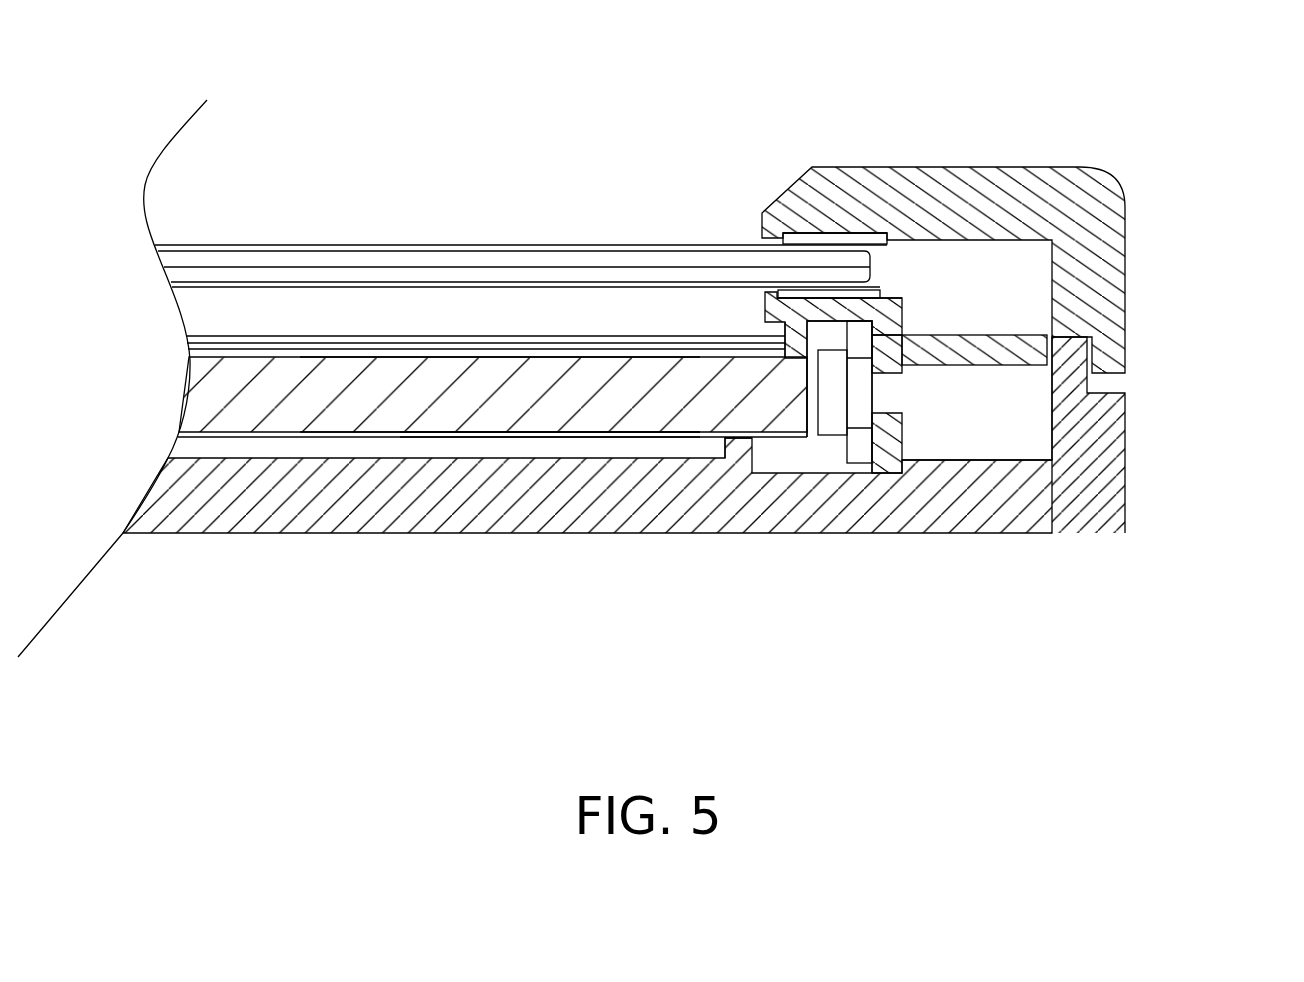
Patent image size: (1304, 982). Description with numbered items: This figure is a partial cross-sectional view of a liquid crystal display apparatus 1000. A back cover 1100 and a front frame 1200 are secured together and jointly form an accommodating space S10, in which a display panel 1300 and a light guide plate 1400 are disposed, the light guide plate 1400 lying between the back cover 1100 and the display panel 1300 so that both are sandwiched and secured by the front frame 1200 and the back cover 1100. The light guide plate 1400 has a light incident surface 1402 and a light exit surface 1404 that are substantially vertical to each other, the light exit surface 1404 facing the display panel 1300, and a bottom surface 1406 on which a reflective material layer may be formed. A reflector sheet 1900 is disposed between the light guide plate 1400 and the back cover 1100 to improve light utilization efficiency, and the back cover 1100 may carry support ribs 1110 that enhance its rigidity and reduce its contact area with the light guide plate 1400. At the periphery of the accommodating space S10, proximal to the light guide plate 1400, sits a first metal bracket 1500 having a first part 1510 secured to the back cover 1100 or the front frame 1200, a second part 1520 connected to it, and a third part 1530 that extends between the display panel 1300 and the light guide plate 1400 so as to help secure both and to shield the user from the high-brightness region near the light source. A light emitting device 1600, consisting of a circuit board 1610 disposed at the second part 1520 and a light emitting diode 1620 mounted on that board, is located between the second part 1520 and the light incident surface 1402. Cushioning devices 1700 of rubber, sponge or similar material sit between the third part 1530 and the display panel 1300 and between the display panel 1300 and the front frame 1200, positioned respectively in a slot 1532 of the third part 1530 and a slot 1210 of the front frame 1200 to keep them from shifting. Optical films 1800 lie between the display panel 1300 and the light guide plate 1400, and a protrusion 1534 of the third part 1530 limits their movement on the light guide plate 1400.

The display apparatus 1000 is at (1110, 712).
The back cover 1100 is at (402, 518).
The support ribs 1110 is at (736, 443).
The front frame 1200 is at (1002, 183).
The slot 1210 is at (860, 230).
The display panel 1300 is at (358, 260).
The light guide plate 1400 is at (486, 420).
The light incident surface 1402 is at (796, 398).
The light exit surface 1404 is at (572, 362).
The bottom surface 1406 is at (436, 428).
The first metal bracket 1500 is at (916, 317).
The first part 1510 is at (947, 347).
The second part 1520 is at (860, 312).
The third part 1530 is at (887, 348).
The slot 1532 is at (790, 295).
The protrusion 1534 is at (779, 327).
The light emitting device 1600 is at (859, 480).
The circuit board 1610 is at (857, 452).
The light emitting diode 1620 is at (838, 423).
The cushioning device 1700 is at (803, 238).
The optical film 1800 is at (536, 351).
The reflector sheet 1900 is at (648, 434).
The accommodating space S10 is at (1026, 432).